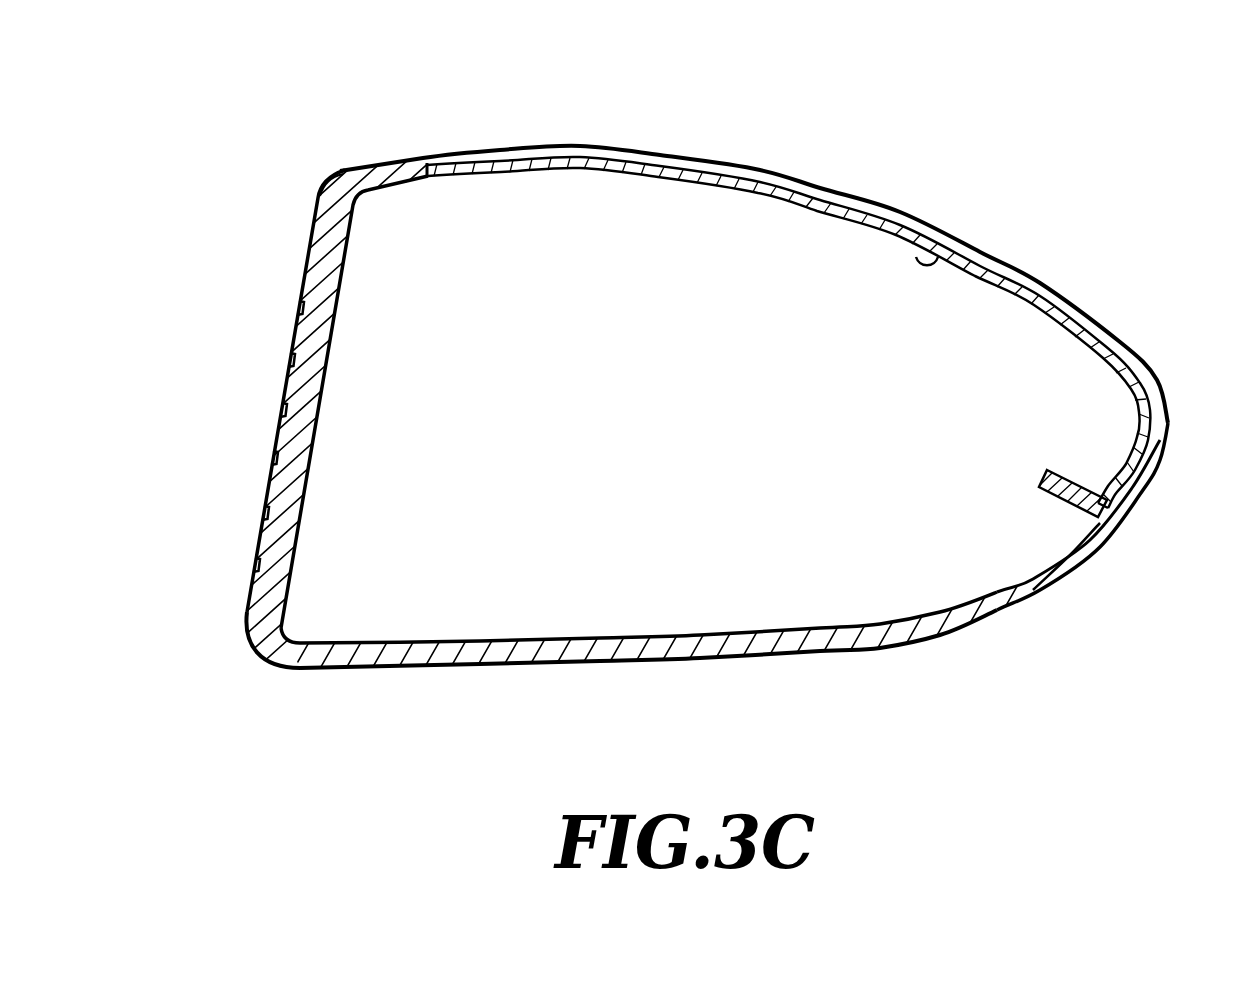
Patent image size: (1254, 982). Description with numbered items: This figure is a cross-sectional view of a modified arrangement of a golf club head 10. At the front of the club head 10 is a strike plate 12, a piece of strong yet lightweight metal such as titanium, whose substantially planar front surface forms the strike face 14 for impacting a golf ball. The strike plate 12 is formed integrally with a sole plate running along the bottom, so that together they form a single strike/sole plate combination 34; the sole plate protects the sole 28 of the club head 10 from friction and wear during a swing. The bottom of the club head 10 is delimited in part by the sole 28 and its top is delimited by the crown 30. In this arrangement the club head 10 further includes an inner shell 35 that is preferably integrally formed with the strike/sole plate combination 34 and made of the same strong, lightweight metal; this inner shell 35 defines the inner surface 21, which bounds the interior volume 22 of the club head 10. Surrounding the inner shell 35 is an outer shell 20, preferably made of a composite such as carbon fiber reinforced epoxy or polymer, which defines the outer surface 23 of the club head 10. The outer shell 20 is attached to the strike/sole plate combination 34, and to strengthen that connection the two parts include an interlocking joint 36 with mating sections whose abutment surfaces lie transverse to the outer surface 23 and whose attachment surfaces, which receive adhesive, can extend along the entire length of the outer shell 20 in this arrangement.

The club head 10 is at (258, 104).
The strike plate 12 is at (293, 254).
The strike face 14 is at (276, 437).
The outer shell 20 is at (693, 153).
The inner surface 21 is at (940, 252).
The interior volume 22 is at (686, 430).
The outer surface 23 is at (1140, 358).
The sole 28 is at (758, 660).
The crown 30 is at (883, 128).
The strike/sole plate combination 34 is at (328, 696).
The inner shell 35 is at (603, 175).
The interlocking joint 36 is at (422, 150).